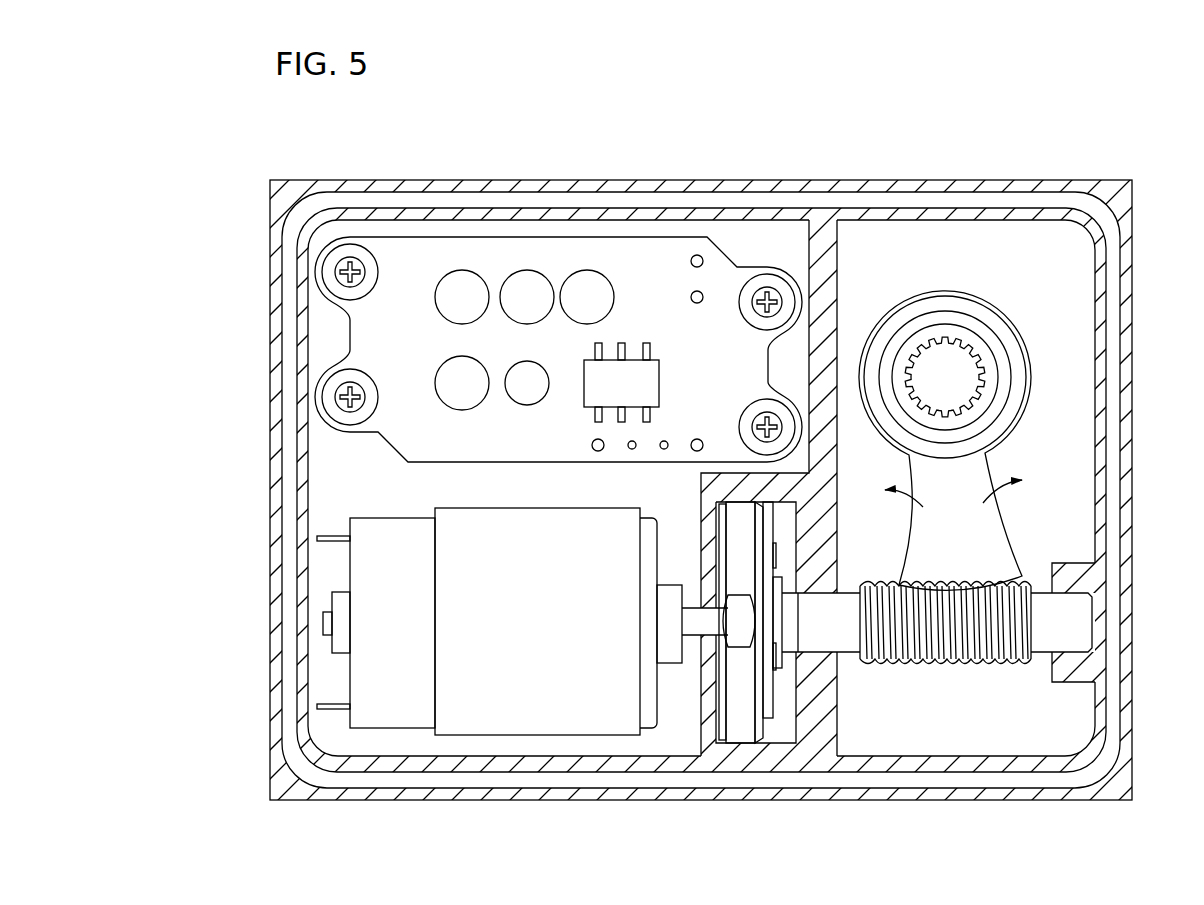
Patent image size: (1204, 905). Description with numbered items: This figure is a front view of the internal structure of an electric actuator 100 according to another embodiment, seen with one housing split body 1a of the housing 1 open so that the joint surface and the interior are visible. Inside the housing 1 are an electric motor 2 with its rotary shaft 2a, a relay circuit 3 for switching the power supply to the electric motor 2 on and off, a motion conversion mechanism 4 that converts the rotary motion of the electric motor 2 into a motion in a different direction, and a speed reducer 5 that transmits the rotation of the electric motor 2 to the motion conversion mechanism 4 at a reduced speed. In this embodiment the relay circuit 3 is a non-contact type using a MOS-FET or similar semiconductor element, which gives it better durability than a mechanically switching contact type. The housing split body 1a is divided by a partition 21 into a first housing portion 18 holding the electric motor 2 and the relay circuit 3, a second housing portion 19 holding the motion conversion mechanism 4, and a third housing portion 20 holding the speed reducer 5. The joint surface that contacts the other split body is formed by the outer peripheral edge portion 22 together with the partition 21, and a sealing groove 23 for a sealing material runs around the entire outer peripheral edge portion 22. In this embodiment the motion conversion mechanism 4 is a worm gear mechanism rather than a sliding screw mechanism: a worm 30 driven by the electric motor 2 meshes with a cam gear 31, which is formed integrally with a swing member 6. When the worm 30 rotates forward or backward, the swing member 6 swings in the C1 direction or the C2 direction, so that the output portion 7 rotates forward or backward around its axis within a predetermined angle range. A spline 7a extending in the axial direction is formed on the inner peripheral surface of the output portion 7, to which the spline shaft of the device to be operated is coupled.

The electric actuator 100 is at (602, 452).
The housing split body 1a is at (602, 452).
The housing 1 is at (602, 452).
The electric motor 2 is at (536, 676).
The rotary shaft 2a is at (691, 630).
The relay circuit 3 is at (635, 352).
The motion conversion mechanism 4 is at (1013, 365).
The speed reducer 5 is at (767, 721).
The swing member 6 is at (997, 474).
The output portion 7 is at (957, 290).
The spline 7a is at (977, 368).
The first housing portion 18 is at (333, 487).
The second housing portion 19 is at (1068, 392).
The third housing portion 20 is at (787, 699).
The partition 21 is at (820, 373).
The outer peripheral edge portion 22 is at (580, 793).
The sealing groove 23 is at (407, 777).
The worm 30 is at (937, 650).
The cam gear 31 is at (972, 594).
The C1 direction C1 is at (1005, 501).
The C2 direction C2 is at (899, 511).